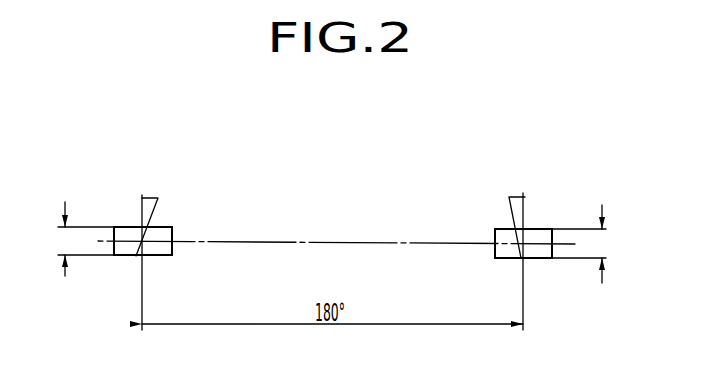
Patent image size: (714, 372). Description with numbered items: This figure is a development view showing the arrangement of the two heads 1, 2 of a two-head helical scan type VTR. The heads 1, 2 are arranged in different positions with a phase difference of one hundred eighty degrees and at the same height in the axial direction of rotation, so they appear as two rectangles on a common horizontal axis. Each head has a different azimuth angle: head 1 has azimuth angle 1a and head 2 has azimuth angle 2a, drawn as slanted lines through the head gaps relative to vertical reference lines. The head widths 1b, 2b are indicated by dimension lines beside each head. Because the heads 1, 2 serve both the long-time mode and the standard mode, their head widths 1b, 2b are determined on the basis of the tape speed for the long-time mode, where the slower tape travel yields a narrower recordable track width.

The head 1 is at (548, 228).
The azimuth angle 1a is at (517, 201).
The head width 1b is at (586, 244).
The head 2 is at (168, 226).
The azimuth angle 2a is at (152, 195).
The head width 2b is at (78, 239).